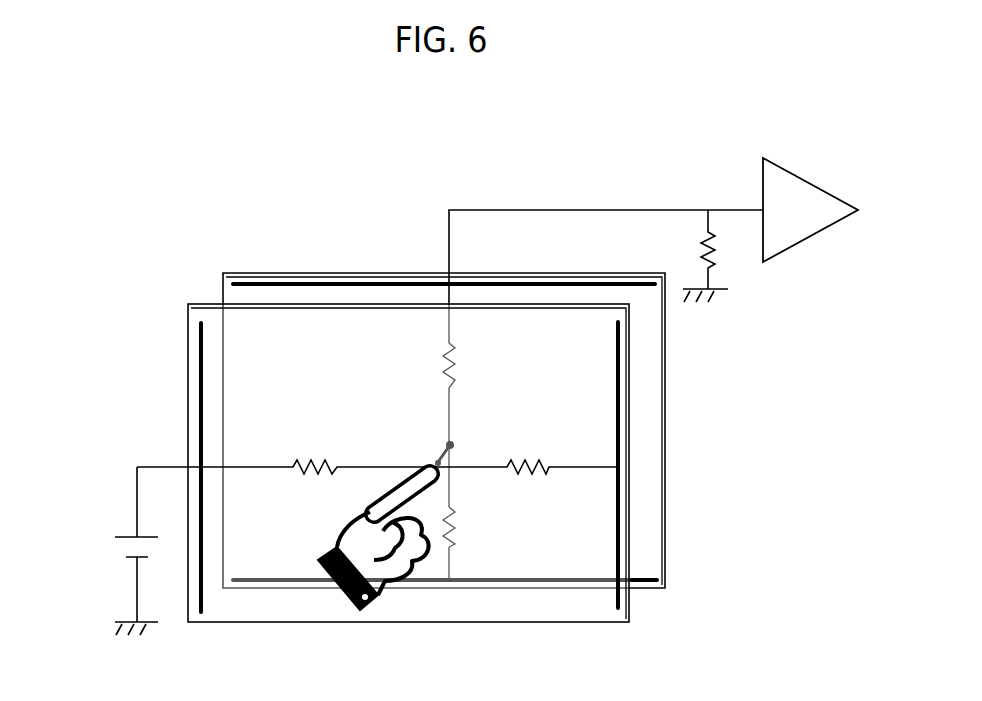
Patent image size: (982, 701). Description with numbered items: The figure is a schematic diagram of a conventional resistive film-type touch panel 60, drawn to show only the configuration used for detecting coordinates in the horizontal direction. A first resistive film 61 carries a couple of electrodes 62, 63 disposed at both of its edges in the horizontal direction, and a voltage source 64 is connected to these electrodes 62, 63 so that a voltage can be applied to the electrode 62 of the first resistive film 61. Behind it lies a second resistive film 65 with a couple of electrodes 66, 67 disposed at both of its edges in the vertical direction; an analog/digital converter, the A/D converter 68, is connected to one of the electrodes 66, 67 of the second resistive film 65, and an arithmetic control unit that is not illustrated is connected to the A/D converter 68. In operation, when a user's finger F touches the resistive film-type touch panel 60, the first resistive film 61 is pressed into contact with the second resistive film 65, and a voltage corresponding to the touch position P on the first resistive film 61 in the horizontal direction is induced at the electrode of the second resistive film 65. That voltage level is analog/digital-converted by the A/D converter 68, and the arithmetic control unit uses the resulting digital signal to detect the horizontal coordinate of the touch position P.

The resistive film-type touch panel 60 is at (160, 231).
The first resistive film 61 is at (187, 348).
The electrode 62 is at (199, 401).
The electrode 63 is at (618, 410).
The voltage source 64 is at (105, 545).
The second resistive film 65 is at (263, 271).
The electrode 66 is at (345, 281).
The electrode 67 is at (265, 580).
The A/D converter 68 is at (810, 178).
The finger F is at (400, 479).
The touch position P is at (435, 458).